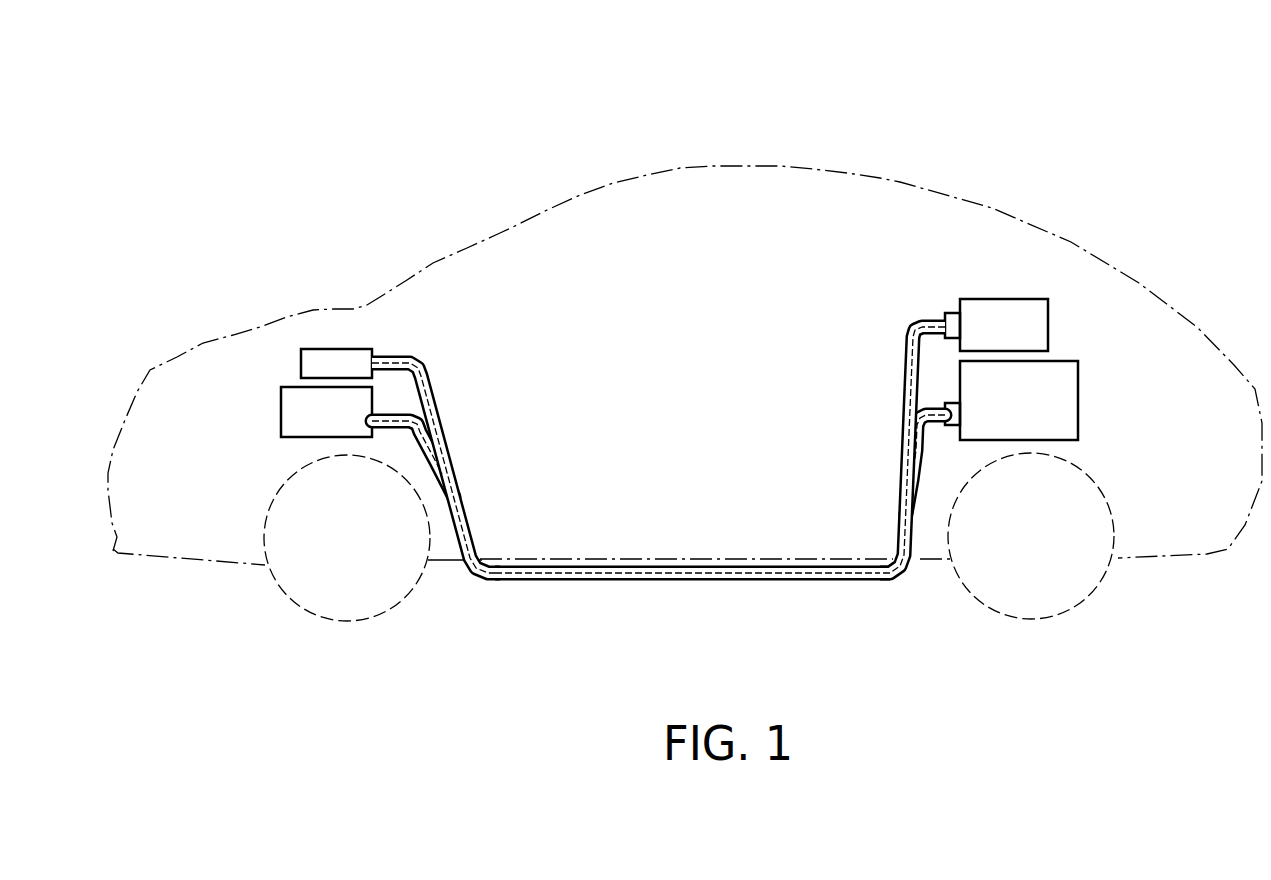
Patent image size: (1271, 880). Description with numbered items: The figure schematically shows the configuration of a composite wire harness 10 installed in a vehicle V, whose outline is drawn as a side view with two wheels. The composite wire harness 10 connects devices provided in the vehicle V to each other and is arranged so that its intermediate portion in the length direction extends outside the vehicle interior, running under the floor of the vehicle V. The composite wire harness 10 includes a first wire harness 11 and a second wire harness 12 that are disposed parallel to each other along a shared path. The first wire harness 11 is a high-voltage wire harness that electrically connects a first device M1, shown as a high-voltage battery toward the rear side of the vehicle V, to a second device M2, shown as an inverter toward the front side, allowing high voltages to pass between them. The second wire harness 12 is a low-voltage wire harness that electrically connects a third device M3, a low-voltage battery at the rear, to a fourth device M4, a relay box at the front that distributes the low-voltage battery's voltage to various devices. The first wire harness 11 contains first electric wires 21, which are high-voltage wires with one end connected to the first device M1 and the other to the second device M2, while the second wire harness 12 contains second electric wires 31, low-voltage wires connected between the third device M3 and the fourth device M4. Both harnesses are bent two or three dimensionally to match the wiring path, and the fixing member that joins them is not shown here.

The vehicle V is at (990, 205).
The composite wire harness 10 is at (658, 457).
The first wire harness 11 is at (683, 582).
The second wire harness 12 is at (428, 377).
The first electric wire 21 is at (902, 460).
The second electric wire 31 is at (902, 356).
The first device M1 is at (1078, 398).
The second device M2 is at (281, 408).
The third device M3 is at (1048, 323).
The fourth device M4 is at (301, 360).